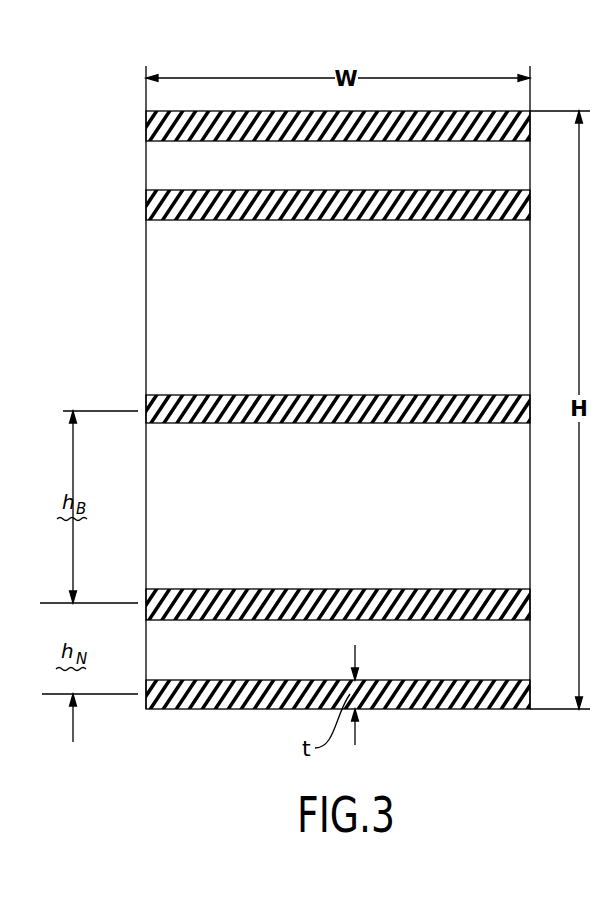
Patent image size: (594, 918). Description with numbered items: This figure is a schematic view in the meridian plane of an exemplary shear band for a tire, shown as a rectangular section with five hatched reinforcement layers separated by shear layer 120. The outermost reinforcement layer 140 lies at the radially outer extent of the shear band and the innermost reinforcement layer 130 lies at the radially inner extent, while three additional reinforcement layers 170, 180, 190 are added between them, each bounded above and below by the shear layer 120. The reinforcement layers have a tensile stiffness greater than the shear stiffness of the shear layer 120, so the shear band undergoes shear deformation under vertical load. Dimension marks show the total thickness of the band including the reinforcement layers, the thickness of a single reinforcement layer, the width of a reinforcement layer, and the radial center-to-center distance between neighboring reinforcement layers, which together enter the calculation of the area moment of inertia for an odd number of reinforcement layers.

The shear layer 120 is at (155, 163).
The innermost reinforcement layer 130 is at (172, 706).
The outermost reinforcement layer 140 is at (158, 121).
The reinforcement layer 170 is at (152, 208).
The reinforcement layer 180 is at (150, 406).
The reinforcement layer 190 is at (152, 604).